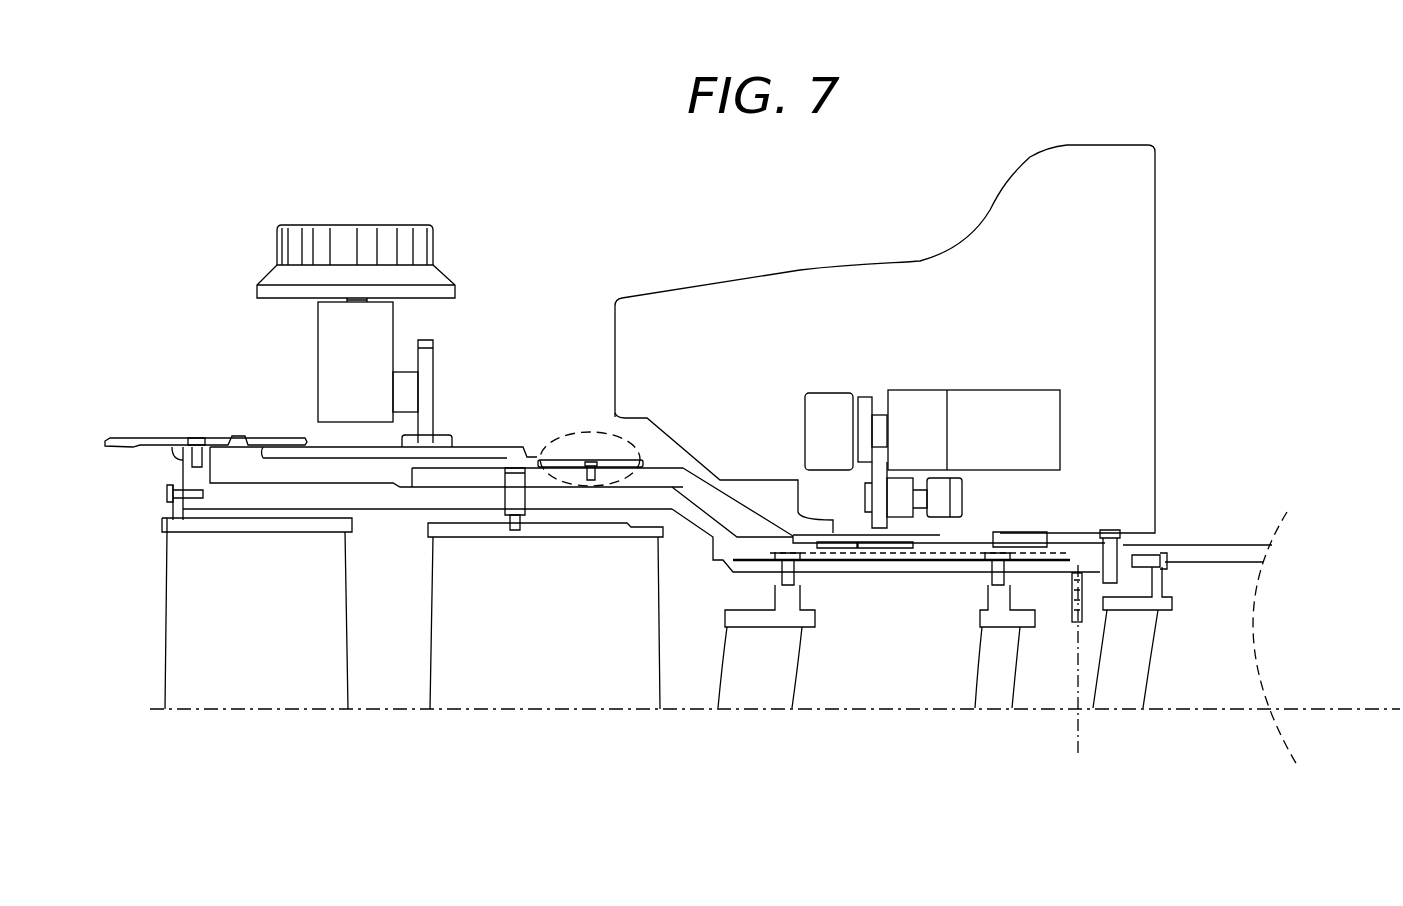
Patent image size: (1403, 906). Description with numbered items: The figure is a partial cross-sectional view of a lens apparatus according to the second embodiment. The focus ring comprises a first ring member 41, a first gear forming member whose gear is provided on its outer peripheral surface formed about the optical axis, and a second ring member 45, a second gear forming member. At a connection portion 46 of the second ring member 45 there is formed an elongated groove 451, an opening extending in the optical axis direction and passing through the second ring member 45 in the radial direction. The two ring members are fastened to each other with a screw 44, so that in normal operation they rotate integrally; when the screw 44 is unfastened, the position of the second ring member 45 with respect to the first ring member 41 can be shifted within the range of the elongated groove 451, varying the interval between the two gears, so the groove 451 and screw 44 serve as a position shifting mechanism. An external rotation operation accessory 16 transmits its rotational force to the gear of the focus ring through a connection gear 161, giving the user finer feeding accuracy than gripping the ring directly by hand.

The rotation operation accessory 16 is at (275, 276).
The connection gear 161 is at (425, 393).
The first ring member 41 is at (725, 452).
The screw 44 is at (595, 460).
The second ring member 45 is at (503, 452).
The elongated groove 451 is at (577, 455).
The connection portion 46 is at (563, 436).